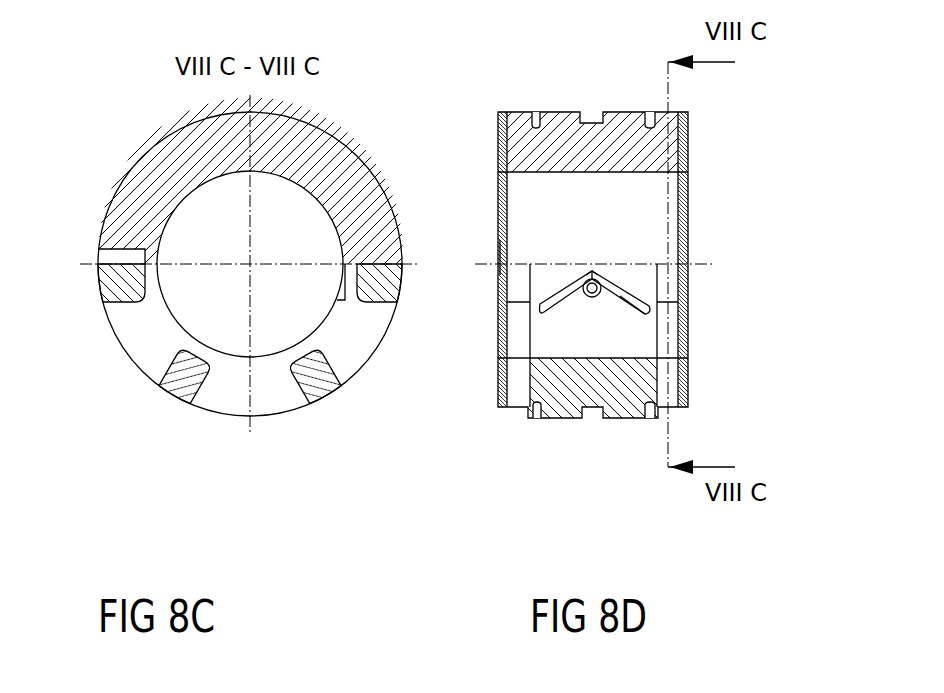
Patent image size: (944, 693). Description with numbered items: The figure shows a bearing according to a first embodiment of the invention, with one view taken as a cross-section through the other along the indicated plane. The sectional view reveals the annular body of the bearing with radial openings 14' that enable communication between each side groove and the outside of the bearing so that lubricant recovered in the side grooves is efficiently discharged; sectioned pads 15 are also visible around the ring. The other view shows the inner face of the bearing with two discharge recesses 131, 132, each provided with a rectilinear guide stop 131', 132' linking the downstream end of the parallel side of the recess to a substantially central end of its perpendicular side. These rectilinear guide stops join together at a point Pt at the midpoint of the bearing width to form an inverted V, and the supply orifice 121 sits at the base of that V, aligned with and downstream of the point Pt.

In FIG. 8C, the radial openings 14' is at (234, 265).
In FIG. 8C, the support pads 15 is at (470, 327).
In FIG. 8D, the support pads 15 is at (513, 321).
In FIG. 8D, the discharge recess 132 is at (505, 216).
In FIG. 8D, the guide stop 132' is at (456, 229).
In FIG. 8D, the discharge recess 131 is at (691, 242).
In FIG. 8D, the guide stop 131' is at (710, 264).
In FIG. 8D, the point Pt is at (598, 266).
In FIG. 8D, the supply orifice 121 is at (602, 296).